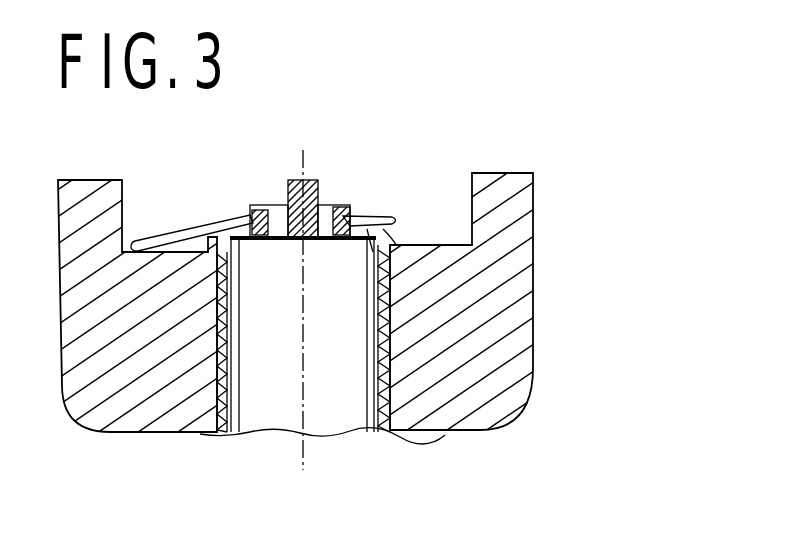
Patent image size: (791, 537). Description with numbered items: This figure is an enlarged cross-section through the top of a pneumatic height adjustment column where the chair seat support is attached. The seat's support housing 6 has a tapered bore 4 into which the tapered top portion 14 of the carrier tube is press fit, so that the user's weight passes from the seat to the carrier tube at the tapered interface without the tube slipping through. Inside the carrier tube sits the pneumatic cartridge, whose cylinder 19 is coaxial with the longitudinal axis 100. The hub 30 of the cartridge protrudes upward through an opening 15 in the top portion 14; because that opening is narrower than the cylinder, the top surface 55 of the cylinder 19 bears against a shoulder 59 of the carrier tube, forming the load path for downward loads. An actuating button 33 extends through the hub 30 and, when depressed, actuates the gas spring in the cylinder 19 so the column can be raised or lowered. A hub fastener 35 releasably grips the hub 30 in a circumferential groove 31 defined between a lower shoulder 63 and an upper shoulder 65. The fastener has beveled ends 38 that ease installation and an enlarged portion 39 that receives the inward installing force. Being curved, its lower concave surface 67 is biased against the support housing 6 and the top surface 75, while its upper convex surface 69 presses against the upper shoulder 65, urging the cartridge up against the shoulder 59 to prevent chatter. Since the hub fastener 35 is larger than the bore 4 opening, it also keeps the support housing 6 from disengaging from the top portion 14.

The tapered bore 4 is at (395, 374).
The support housing 6 is at (487, 313).
The top portion 14 is at (397, 243).
The opening 15 is at (242, 220).
The cylinder 19 is at (343, 397).
The hub 30 is at (343, 238).
The circumferential groove 31 is at (362, 214).
The actuating button 33 is at (305, 182).
The hub fastener 35 is at (163, 222).
The beveled ends 38 is at (380, 226).
The enlarged portion 39 is at (133, 242).
The top surface 55 is at (326, 210).
The shoulder 59 is at (237, 248).
The lower shoulder 63 is at (262, 243).
The upper shoulder 65 is at (255, 210).
The lower concave surface 67 is at (188, 246).
The upper convex surface 69 is at (182, 228).
The top surface 75 is at (208, 227).
The longitudinal axis 100 is at (302, 444).